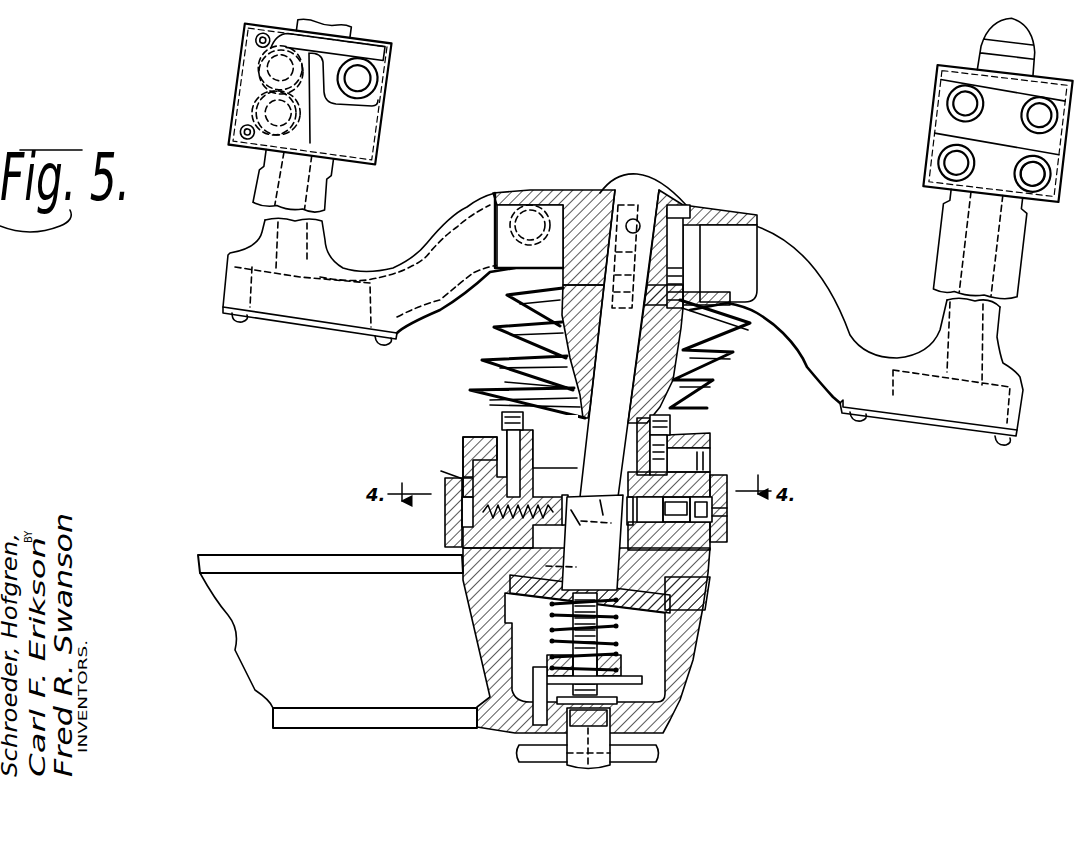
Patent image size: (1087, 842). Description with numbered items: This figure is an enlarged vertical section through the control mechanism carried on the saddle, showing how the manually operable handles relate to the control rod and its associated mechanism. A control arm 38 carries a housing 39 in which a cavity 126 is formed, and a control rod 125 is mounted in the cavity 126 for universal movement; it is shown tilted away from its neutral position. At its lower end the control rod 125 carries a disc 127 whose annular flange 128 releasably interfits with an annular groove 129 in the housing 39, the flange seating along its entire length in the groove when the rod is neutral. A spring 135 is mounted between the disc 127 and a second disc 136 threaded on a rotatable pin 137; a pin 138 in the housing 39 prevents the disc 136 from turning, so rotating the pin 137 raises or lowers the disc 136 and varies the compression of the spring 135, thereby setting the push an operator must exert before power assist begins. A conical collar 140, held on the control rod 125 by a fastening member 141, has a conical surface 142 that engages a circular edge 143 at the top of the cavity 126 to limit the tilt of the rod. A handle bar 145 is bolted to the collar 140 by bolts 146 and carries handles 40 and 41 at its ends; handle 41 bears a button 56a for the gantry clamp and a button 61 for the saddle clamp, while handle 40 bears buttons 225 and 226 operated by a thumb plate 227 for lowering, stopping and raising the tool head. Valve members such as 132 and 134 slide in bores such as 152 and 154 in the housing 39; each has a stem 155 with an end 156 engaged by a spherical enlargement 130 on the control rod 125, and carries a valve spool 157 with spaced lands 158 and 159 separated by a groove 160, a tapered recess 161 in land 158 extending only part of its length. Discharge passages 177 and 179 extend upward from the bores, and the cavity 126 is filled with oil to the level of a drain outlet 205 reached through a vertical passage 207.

The control arm 38 is at (316, 555).
The housing 39 is at (701, 631).
The handle 40 is at (332, 238).
The handle 41 is at (1003, 278).
The button 56a is at (1033, 183).
The button 61 is at (952, 161).
The control rod 125 is at (626, 432).
The cavity 126 is at (522, 441).
The disc 127 is at (669, 611).
The annular flange 128 is at (711, 586).
The annular groove 129 is at (711, 563).
The spherical enlargement 130 is at (592, 542).
The valve member 132 is at (462, 538).
The valve member 134 is at (727, 519).
The spring 135 is at (636, 661).
The disc 136 is at (636, 686).
The rotatable pin 137 is at (613, 746).
The pin 138 is at (513, 741).
The conical collar 140 is at (516, 323).
The fastening member 141 is at (652, 199).
The conical surface 142 is at (500, 382).
The circular edge 143 is at (490, 406).
The handle bar 145 is at (787, 247).
The bolts 146 is at (692, 209).
The bore 152 is at (541, 496).
The bore 154 is at (650, 509).
The stem 155 is at (452, 512).
The end 156 is at (561, 506).
The valve spool 157 is at (561, 496).
The land 158 is at (727, 509).
The land 159 is at (596, 542).
The groove 160 is at (701, 481).
The recess 161 is at (463, 479).
The discharge passage 177 is at (481, 433).
The discharge passage 179 is at (691, 441).
The drain outlet 205 is at (441, 471).
The vertical passage 207 is at (549, 567).
The button 225 is at (258, 78).
The button 226 is at (246, 132).
The thumb plate 227 is at (349, 135).